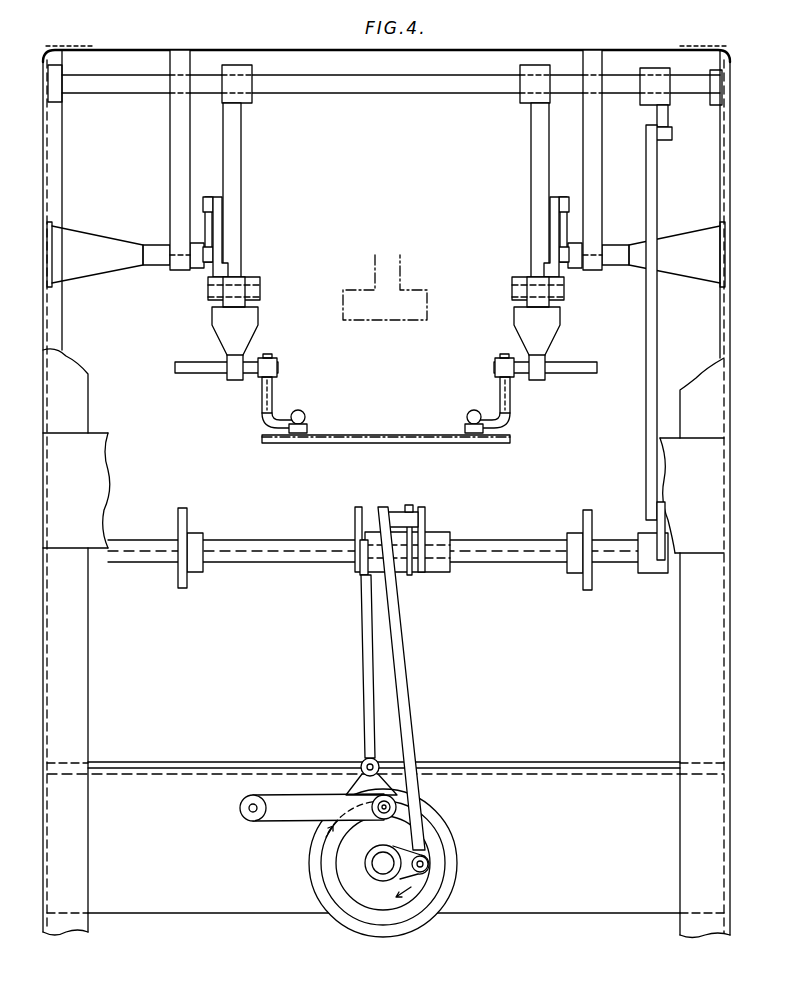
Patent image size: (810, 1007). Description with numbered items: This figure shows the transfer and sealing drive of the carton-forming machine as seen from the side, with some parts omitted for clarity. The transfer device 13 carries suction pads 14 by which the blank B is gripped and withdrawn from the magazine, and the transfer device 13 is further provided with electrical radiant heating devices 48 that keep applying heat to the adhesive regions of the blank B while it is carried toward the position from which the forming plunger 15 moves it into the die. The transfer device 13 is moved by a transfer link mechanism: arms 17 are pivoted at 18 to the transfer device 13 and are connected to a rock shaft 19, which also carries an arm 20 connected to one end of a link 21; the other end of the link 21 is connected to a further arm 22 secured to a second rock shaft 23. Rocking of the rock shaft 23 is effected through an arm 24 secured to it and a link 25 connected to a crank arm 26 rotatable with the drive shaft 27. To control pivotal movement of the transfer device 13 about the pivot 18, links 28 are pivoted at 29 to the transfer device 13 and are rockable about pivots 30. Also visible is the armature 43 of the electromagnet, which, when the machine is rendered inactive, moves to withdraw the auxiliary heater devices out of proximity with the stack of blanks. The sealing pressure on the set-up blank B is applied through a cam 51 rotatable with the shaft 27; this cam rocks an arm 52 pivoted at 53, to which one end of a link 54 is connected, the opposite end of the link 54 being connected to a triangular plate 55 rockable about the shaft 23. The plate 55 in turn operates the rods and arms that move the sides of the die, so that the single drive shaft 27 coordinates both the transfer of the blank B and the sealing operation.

The transfer device 13 is at (557, 385).
The suction pads 14 is at (303, 432).
The forming plunger 15 is at (412, 297).
The arms 17 is at (242, 139).
The pivot 18 is at (261, 296).
The rock shaft 19 is at (276, 82).
The arm 20 is at (664, 128).
The link 21 is at (652, 168).
The further arm 22 is at (657, 532).
The rock shaft 23 is at (606, 563).
The arm 24 is at (422, 521).
The link 25 is at (404, 690).
The crank arm 26 is at (403, 873).
The drive shaft 27 is at (383, 866).
The links 28 is at (206, 228).
The pivot 29 is at (208, 198).
The pivots 30 is at (213, 258).
The armature 43 is at (187, 518).
The electrical radiant heating devices 48 is at (276, 437).
The cam 51 is at (428, 818).
The arm 52 is at (302, 821).
The pivot 53 is at (254, 813).
The link 54 is at (364, 688).
The triangular plate 55 is at (355, 517).
The blank B is at (366, 443).